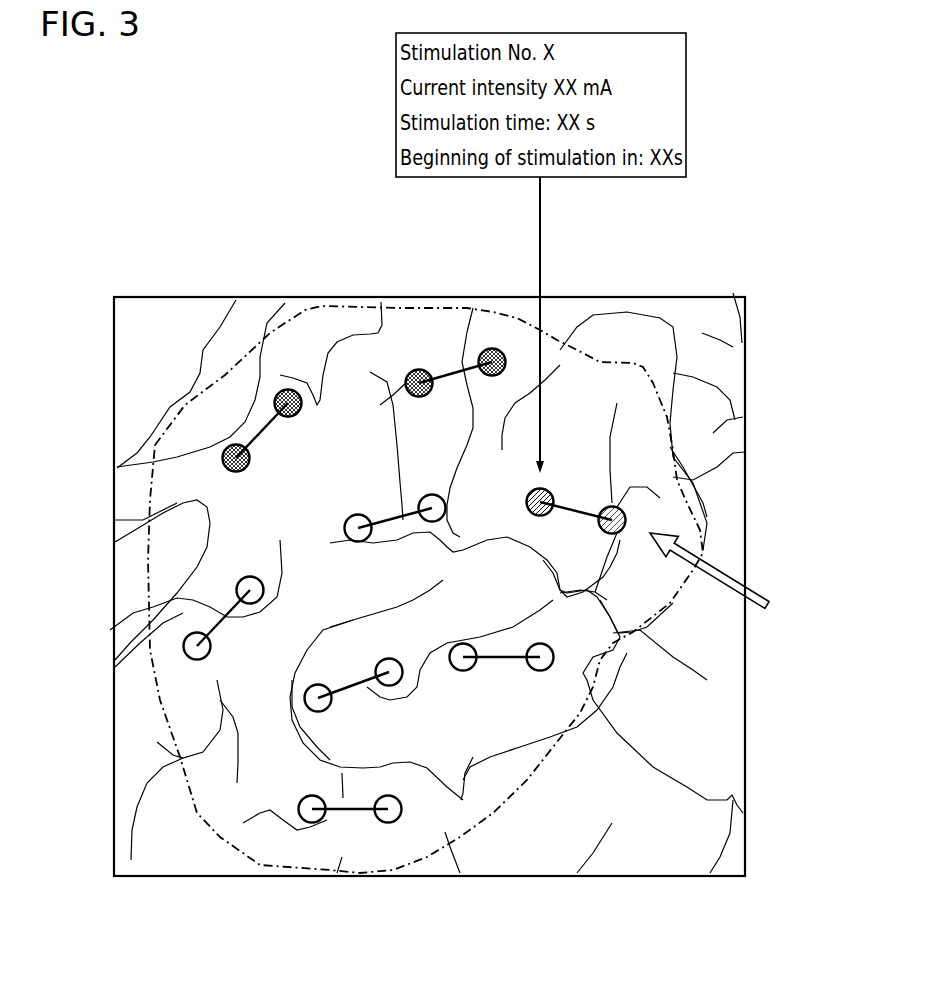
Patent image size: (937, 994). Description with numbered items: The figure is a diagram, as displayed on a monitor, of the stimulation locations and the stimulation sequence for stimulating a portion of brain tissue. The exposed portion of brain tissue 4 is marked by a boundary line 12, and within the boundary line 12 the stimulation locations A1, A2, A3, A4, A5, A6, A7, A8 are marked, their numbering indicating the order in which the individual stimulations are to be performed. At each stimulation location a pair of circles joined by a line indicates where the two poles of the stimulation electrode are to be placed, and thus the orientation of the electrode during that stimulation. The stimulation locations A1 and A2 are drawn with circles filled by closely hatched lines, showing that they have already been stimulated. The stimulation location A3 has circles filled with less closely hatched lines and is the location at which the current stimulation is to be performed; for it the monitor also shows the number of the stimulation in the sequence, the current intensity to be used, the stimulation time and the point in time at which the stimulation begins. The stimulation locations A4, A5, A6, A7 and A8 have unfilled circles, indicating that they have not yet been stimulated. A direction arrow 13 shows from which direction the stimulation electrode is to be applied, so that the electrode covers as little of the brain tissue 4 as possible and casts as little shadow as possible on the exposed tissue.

The exposed portion of brain tissue 4 is at (540, 725).
The boundary line 12 is at (745, 452).
The direction arrow 13 is at (768, 605).
The stimulation location A1 is at (238, 414).
The stimulation location A2 is at (444, 340).
The stimulation location A3 is at (583, 478).
The stimulation location A4 is at (380, 490).
The stimulation location A5 is at (202, 603).
The stimulation location A6 is at (370, 707).
The stimulation location A7 is at (498, 688).
The stimulation location A8 is at (356, 842).